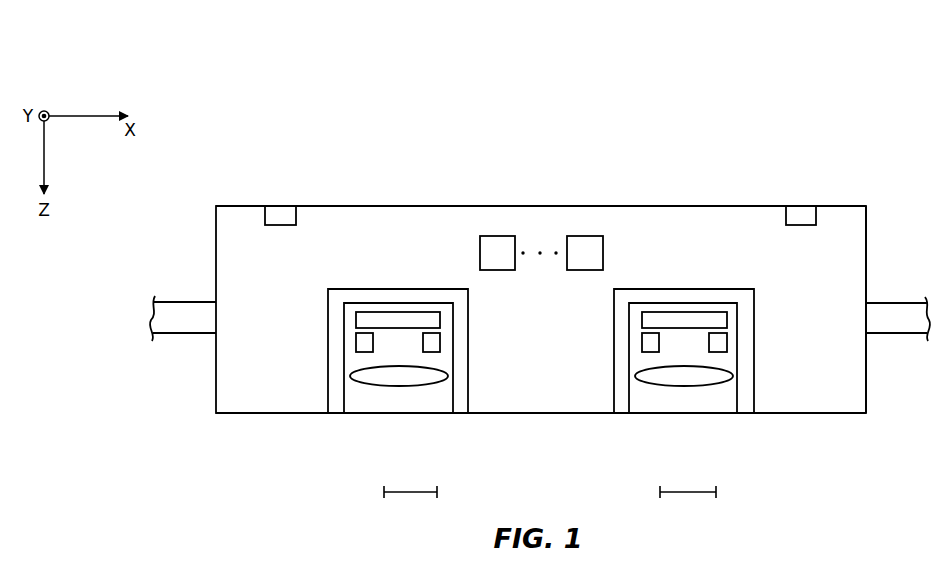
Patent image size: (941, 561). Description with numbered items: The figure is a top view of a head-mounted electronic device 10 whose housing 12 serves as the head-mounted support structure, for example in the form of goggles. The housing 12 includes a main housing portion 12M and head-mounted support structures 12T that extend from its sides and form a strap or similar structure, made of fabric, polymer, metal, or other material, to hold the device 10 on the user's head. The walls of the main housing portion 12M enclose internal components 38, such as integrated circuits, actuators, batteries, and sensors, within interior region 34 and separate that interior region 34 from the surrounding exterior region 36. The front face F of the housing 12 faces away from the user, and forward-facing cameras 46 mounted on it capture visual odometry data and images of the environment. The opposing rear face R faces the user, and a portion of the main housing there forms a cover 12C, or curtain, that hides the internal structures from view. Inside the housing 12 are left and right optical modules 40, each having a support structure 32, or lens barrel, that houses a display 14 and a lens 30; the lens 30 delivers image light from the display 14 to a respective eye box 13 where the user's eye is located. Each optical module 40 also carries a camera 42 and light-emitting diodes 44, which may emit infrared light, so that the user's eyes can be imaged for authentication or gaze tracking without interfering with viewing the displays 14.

The electronic device 10 is at (803, 66).
The housing 12 is at (610, 215).
The main housing portion 12M is at (242, 200).
The cover 12C is at (234, 414).
The head-mounted support structures 12T is at (188, 320).
The eye boxes 13 is at (437, 490).
The displays 14 is at (418, 322).
The lens 30 is at (636, 378).
The support structure 32 is at (339, 297).
The interior region 34 is at (831, 253).
The exterior region 36 is at (403, 176).
The internal components 38 is at (582, 243).
The optical modules 40 is at (317, 401).
The camera 42 is at (651, 343).
The light-emitting diodes 44 is at (363, 345).
The cameras 46 is at (282, 218).
The front face F is at (669, 192).
The rear face R is at (821, 441).